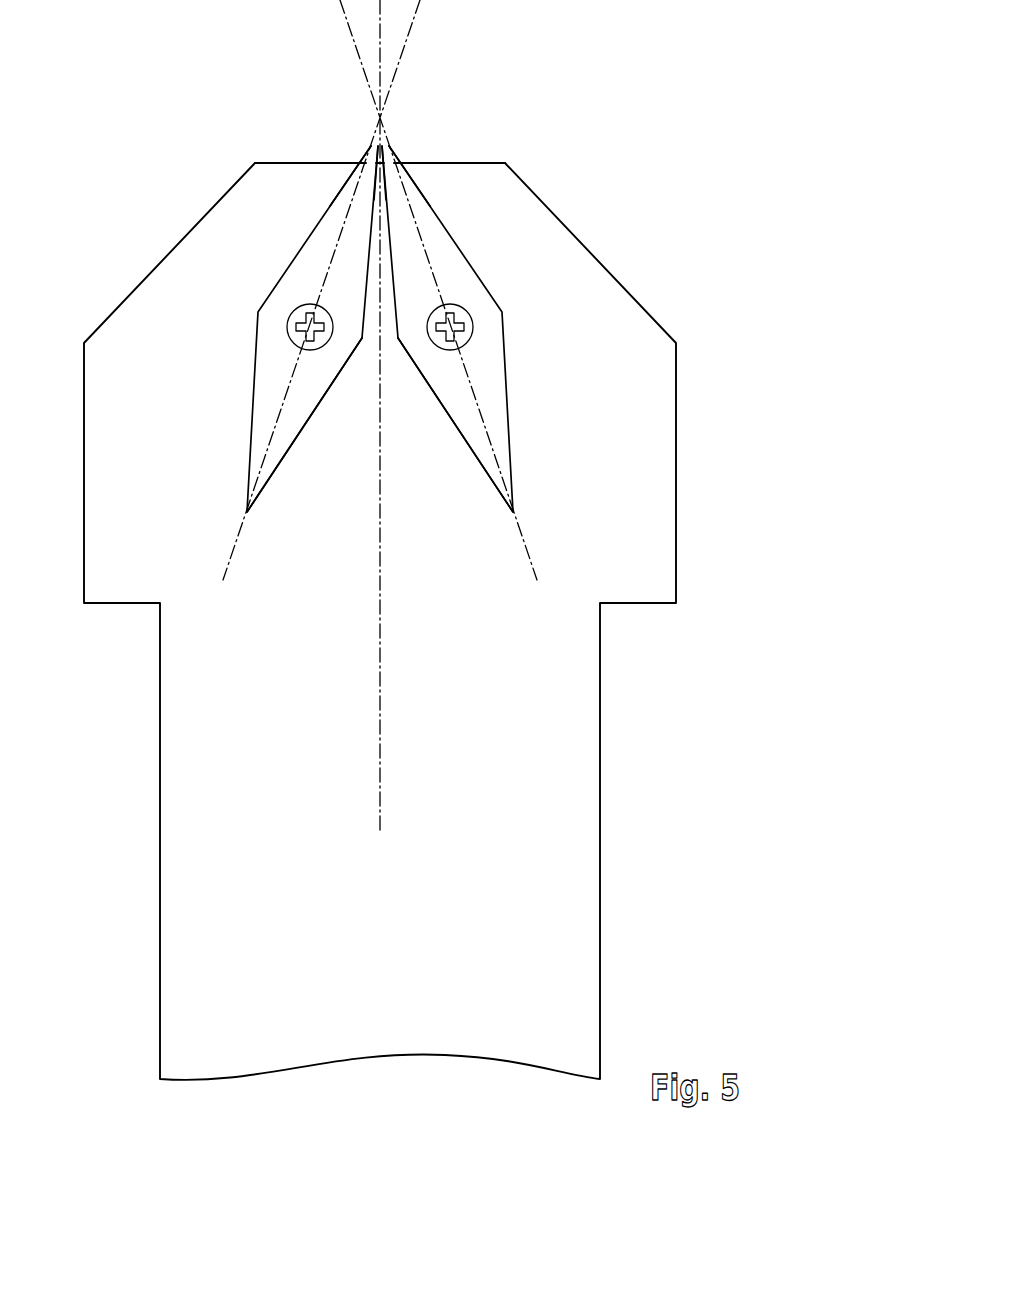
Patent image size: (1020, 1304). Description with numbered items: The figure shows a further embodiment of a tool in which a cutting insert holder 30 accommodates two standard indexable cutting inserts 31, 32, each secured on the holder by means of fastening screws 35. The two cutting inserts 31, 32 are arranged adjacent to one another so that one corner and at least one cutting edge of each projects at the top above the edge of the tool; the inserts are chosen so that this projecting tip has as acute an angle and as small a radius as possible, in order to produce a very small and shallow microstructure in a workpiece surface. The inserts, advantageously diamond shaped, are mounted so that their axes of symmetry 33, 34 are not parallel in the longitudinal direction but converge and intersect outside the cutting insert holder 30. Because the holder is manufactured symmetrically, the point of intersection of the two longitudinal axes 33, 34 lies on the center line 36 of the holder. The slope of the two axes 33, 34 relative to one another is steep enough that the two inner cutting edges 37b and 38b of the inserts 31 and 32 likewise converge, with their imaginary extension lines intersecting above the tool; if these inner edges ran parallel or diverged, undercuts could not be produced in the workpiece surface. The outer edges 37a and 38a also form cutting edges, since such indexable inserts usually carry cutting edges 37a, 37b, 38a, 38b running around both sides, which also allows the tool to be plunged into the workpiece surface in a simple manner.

The cutting insert holder 30 is at (600, 759).
The first cutting insert 31 is at (272, 483).
The second cutting insert 32 is at (490, 487).
The axis of symmetry of the first cutting insert 33 is at (275, 436).
The axis of symmetry of the second cutting insert 34 is at (485, 436).
The fastening screws 35 is at (287, 318).
The center line of the cutting insert holder 36 is at (380, 757).
The outer edge of the first cutting insert 37a is at (368, 150).
The inner cutting edge of the first cutting insert 37b is at (378, 141).
The outer edge of the second cutting insert 38a is at (392, 150).
The inner cutting edge of the second cutting insert 38b is at (382, 141).